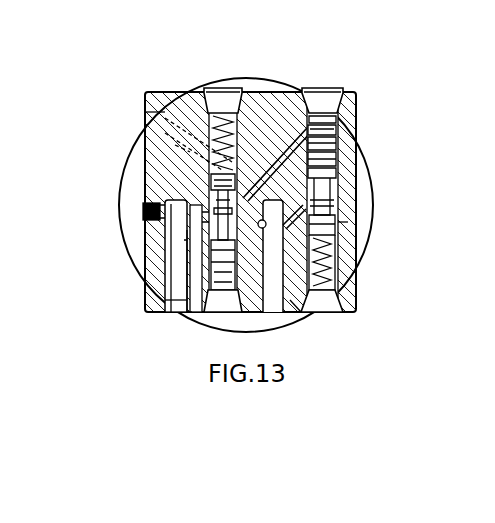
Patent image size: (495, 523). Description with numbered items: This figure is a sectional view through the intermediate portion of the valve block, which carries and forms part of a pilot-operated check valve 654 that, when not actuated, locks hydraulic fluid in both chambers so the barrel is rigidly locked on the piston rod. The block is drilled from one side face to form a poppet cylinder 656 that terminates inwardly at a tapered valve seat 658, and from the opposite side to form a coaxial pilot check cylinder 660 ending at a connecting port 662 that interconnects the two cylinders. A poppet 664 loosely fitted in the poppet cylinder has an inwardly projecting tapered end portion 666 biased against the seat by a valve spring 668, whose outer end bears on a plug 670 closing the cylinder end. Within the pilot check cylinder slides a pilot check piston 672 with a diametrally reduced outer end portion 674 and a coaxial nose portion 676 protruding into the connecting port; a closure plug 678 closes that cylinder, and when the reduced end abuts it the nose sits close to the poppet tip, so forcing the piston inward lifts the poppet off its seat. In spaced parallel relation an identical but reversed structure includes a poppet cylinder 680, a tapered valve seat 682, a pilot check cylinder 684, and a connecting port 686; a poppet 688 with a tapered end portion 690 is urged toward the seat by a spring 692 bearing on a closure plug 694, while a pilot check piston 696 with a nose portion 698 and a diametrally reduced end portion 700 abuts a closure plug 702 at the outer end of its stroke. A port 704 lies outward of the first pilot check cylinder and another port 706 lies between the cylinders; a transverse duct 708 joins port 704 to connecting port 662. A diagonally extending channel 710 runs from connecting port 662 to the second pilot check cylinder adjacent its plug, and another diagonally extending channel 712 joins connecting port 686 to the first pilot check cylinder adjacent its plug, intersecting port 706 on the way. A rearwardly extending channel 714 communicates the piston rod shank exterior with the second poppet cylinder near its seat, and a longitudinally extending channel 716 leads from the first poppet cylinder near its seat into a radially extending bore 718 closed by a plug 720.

The pilot-operated check valve 654 is at (150, 316).
The poppet cylinder 656 is at (202, 89).
The tapered valve seat 658 is at (148, 205).
The pilot check cylinder 660 is at (178, 258).
The connecting port 662 is at (165, 203).
The poppet 664 is at (190, 148).
The tapered end portion 666 is at (205, 166).
The valve spring 668 is at (247, 118).
The plug 670 is at (231, 86).
The pilot check piston 672 is at (198, 285).
The diametrally reduced outer end portion 674 is at (170, 300).
The nose portion 676 is at (180, 233).
The closure plug 678 is at (222, 314).
The poppet cylinder 680 is at (346, 259).
The tapered valve seat 682 is at (340, 208).
The pilot check cylinder 684 is at (340, 151).
The connecting port 686 is at (340, 184).
The poppet 688 is at (350, 241).
The tapered end portion 690 is at (355, 226).
The spring 692 is at (352, 282).
The closure plug 694 is at (330, 315).
The pilot check piston 696 is at (352, 133).
The nose portion 698 is at (352, 168).
The diametrally reduced end portion 700 is at (353, 112).
The closure plug 702 is at (338, 88).
The port 704 is at (162, 314).
The port 706 is at (298, 314).
The duct 708 is at (200, 222).
The diagonally extending channel 710 is at (306, 84).
The diagonally extending channel 712 is at (275, 314).
The rearwardly extending channel 714 is at (302, 313).
The longitudinally extending channel 716 is at (256, 186).
The radially extending bore 718 is at (300, 86).
The plug 720 is at (150, 118).